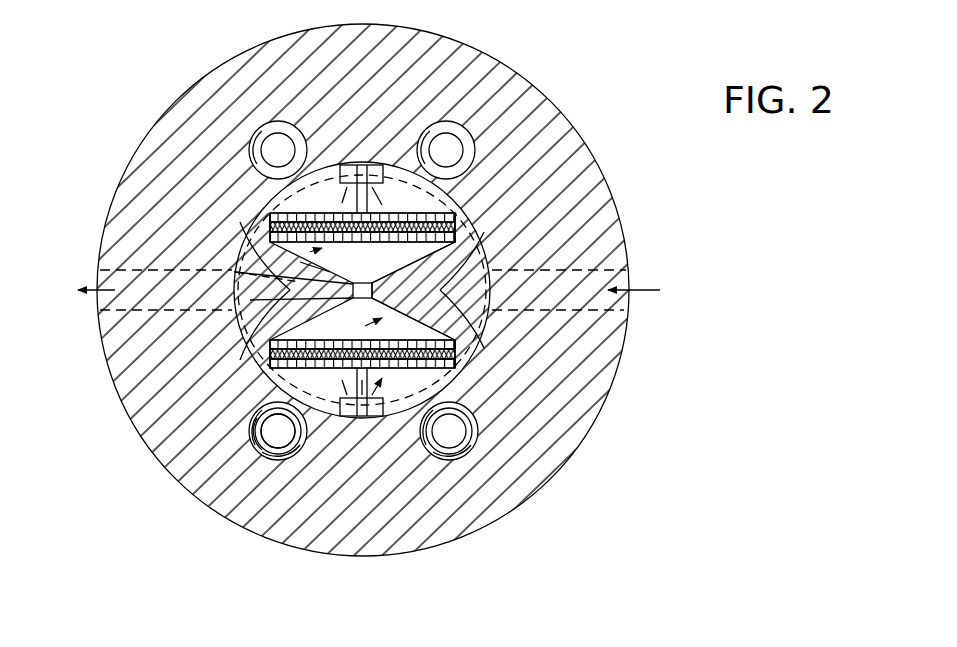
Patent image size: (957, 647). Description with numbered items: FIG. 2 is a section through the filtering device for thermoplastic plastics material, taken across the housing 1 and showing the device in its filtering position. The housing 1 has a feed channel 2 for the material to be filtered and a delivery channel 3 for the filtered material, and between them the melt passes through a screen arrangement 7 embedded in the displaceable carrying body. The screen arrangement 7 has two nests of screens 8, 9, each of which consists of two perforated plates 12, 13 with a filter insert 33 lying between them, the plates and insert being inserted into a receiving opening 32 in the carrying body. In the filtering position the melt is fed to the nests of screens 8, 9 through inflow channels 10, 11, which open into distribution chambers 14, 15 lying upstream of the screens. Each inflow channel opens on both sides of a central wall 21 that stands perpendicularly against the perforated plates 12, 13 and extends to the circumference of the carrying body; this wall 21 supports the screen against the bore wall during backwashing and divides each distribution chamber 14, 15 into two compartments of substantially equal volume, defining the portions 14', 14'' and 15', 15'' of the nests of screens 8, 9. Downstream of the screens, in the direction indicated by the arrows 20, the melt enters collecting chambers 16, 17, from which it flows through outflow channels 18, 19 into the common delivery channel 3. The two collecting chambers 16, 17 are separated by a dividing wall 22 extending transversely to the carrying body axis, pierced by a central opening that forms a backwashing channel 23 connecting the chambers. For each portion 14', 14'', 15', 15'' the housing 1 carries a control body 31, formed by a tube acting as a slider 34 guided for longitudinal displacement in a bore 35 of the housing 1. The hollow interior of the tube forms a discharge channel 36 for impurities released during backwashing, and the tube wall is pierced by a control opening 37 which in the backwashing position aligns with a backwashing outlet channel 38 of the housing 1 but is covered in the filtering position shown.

The housing 1 is at (600, 150).
The feed channel 2 is at (610, 277).
The delivery channel 3 is at (115, 298).
The screen arrangement 7 is at (236, 396).
The nest of screens 8 is at (440, 205).
The nest of screens 9 is at (460, 355).
The inflow channel 10 is at (358, 165).
The inflow channel 11 is at (352, 416).
The perforated plate 12 is at (250, 352).
The perforated plate 13 is at (282, 372).
The distribution chamber 14 is at (362, 174).
The portion of the nest of screens 14' is at (239, 199).
The portion of the nest of screens 14'' is at (437, 152).
The distribution chamber 15 is at (362, 403).
The portion of the nest of screens 15' is at (249, 392).
The portion of the nest of screens 15'' is at (426, 420).
The collecting chamber 16 is at (420, 250).
The collecting chamber 17 is at (300, 332).
The outflow channel 18 is at (292, 230).
The outflow channel 19 is at (235, 310).
The arrows 20 is at (343, 205).
The central wall 21 is at (366, 168).
The dividing wall 22 is at (413, 291).
The backwashing channel 23 is at (358, 283).
The control body 31 is at (264, 118).
The receiving opening 32 is at (458, 370).
The filter insert 33 is at (349, 393).
The slider 34 is at (282, 446).
The bore 35 is at (466, 448).
The discharge channel 36 is at (272, 462).
The control opening 37 is at (289, 444).
The backwashing outlet channel 38 is at (312, 168).